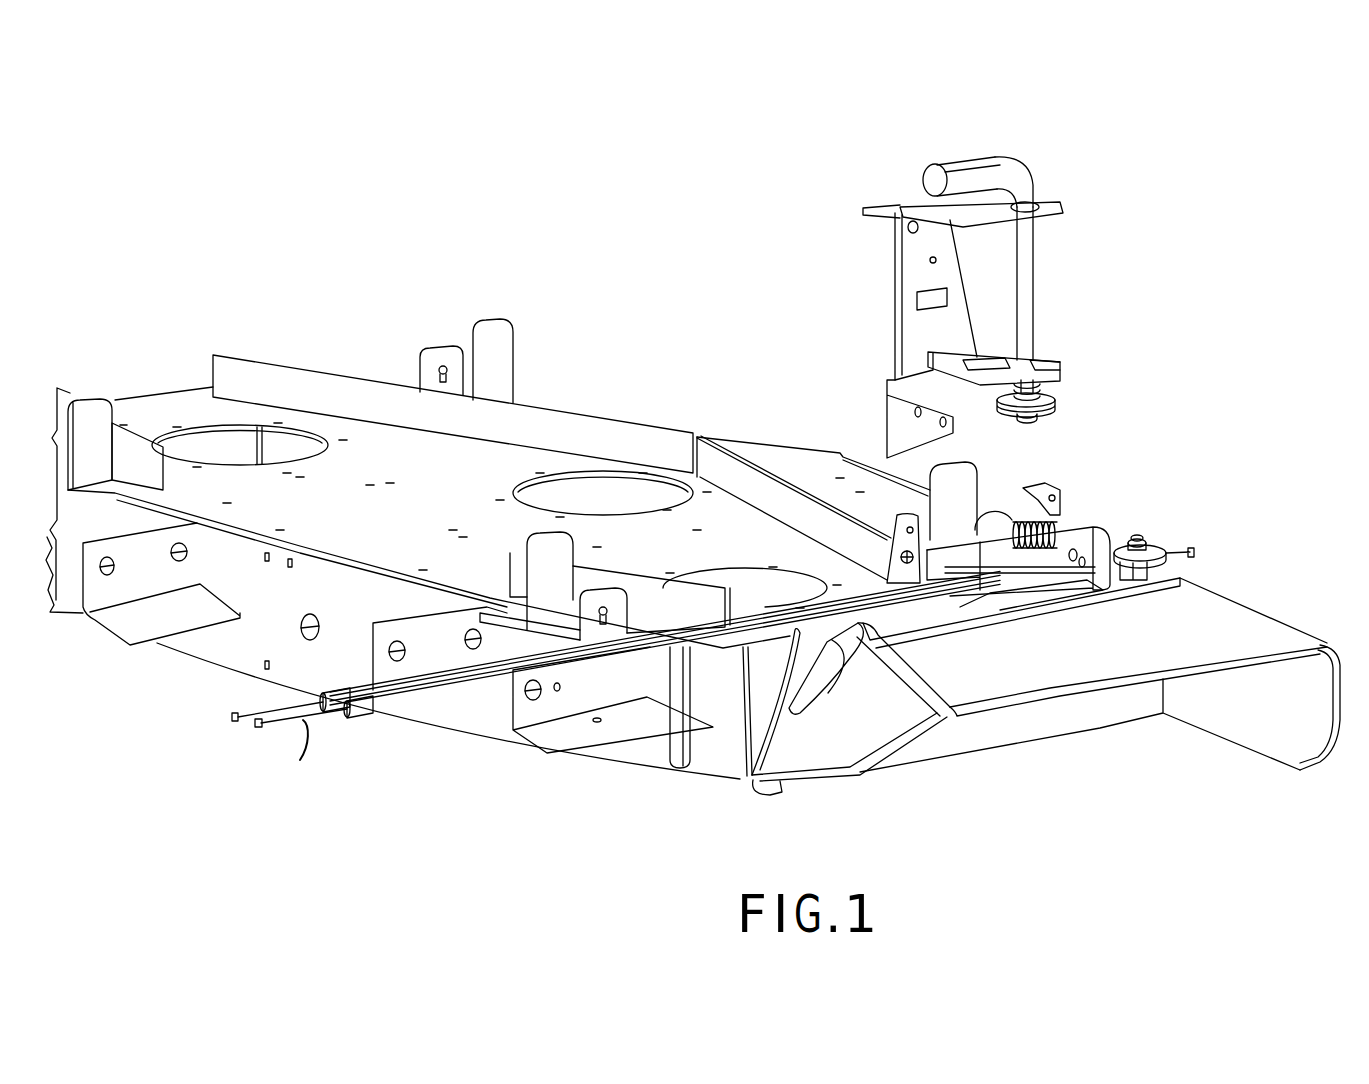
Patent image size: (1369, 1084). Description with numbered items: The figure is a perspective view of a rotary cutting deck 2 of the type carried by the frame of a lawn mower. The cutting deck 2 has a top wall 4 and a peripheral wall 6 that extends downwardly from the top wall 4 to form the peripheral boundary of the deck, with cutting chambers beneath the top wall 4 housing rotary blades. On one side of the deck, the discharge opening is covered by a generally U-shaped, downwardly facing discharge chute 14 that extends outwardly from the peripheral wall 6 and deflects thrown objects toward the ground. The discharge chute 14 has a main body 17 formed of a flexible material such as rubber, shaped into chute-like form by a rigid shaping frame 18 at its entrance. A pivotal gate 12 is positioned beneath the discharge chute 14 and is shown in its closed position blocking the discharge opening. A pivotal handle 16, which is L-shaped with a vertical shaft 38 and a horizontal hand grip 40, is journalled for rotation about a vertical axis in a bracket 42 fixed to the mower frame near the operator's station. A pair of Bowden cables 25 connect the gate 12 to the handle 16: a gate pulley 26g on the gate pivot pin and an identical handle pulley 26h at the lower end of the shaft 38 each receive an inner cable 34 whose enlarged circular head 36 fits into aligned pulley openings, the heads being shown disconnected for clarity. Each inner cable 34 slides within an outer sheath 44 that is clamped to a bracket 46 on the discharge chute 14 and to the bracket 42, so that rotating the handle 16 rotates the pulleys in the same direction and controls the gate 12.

The rotary cutting deck 2 is at (630, 323).
The top wall 4 is at (368, 457).
The peripheral wall 6 is at (282, 606).
The pivotal gate 12 is at (1003, 718).
The discharge chute 14 is at (1217, 618).
The pivotal handle 16 is at (1014, 272).
The main body 17 is at (1093, 660).
The rigid shaping frame 18 is at (1000, 612).
The Bowden cables 25 is at (432, 668).
The gate pulley 26g is at (1148, 530).
The handle pulley 26h is at (1073, 394).
The inner cable 34 is at (1170, 555).
The enlarged circular head 36 is at (260, 723).
The vertical shaft 38 is at (1027, 293).
The horizontal hand grip 40 is at (977, 177).
The bracket 42 is at (903, 267).
The outer sheath 44 is at (487, 680).
The bracket 46 is at (1080, 527).